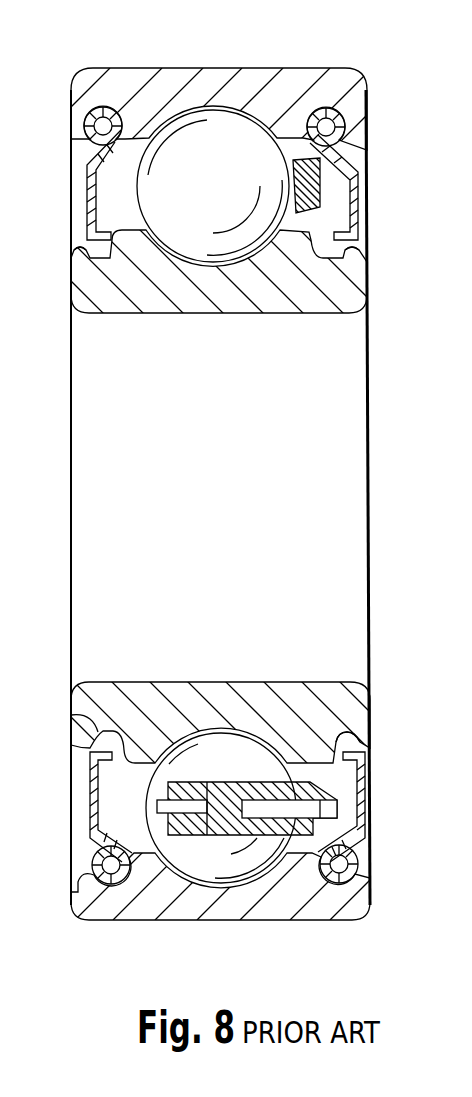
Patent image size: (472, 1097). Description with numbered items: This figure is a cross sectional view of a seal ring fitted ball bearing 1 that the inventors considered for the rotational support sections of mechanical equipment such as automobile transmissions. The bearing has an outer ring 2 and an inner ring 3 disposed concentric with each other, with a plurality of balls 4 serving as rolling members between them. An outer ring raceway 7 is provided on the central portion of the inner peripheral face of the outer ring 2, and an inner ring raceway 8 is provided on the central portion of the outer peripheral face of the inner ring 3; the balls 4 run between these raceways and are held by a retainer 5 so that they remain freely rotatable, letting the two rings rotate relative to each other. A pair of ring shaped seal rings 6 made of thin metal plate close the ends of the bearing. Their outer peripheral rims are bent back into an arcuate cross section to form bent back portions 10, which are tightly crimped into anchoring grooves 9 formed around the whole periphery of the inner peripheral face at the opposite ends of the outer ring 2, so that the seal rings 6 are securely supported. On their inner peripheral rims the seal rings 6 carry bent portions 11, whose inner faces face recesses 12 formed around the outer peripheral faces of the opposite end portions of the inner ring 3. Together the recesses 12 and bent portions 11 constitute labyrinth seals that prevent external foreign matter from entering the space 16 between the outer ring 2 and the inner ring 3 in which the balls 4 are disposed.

The seal ring fitted ball bearing 1 is at (392, 92).
The outer ring 2 is at (137, 80).
The inner ring 3 is at (333, 690).
The balls 4 is at (245, 135).
The retainer 5 is at (357, 155).
The seal rings 6 is at (211, 185).
The outer ring raceway 7 is at (190, 118).
The inner ring raceway 8 is at (196, 740).
The anchoring grooves 9 is at (92, 112).
The bent back portions 10 is at (333, 108).
The bent portions 11 is at (87, 258).
The recesses 12 is at (353, 262).
The space 16 is at (90, 178).